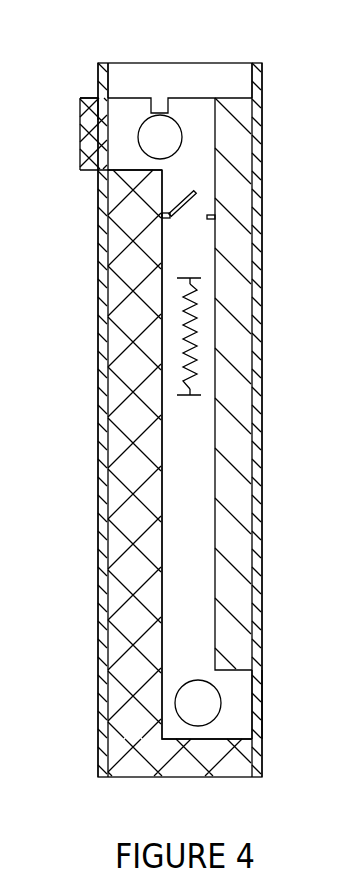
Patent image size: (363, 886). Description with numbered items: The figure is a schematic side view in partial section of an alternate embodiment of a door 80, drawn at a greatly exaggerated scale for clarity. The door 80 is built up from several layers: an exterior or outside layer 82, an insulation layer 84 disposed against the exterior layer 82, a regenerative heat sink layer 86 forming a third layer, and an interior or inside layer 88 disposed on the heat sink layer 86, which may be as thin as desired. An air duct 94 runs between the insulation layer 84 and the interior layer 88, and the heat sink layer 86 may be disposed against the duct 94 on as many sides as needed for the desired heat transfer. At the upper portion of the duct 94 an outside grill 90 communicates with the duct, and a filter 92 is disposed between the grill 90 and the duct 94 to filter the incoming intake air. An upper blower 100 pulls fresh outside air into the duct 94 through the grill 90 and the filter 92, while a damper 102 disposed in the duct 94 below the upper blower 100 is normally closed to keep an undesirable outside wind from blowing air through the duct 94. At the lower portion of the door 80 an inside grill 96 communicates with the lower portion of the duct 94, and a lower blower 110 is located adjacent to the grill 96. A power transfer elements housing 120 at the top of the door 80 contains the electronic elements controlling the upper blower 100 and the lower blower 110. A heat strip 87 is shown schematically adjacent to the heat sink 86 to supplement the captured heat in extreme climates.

The door 80 is at (258, 50).
The exterior layer 82 is at (104, 289).
The insulation layer 84 is at (112, 345).
The regenerative heat sink layer 86 is at (233, 355).
The heat strip 87 is at (193, 305).
The interior layer 88 is at (257, 433).
The outside grill 90 is at (80, 161).
The filter 92 is at (97, 99).
The air duct 94 is at (197, 437).
The inside grill 96 is at (262, 692).
The upper blower 100 is at (182, 130).
The damper 102 is at (192, 203).
The lower blower 110 is at (221, 707).
The power transfer elements housing 120 is at (158, 75).